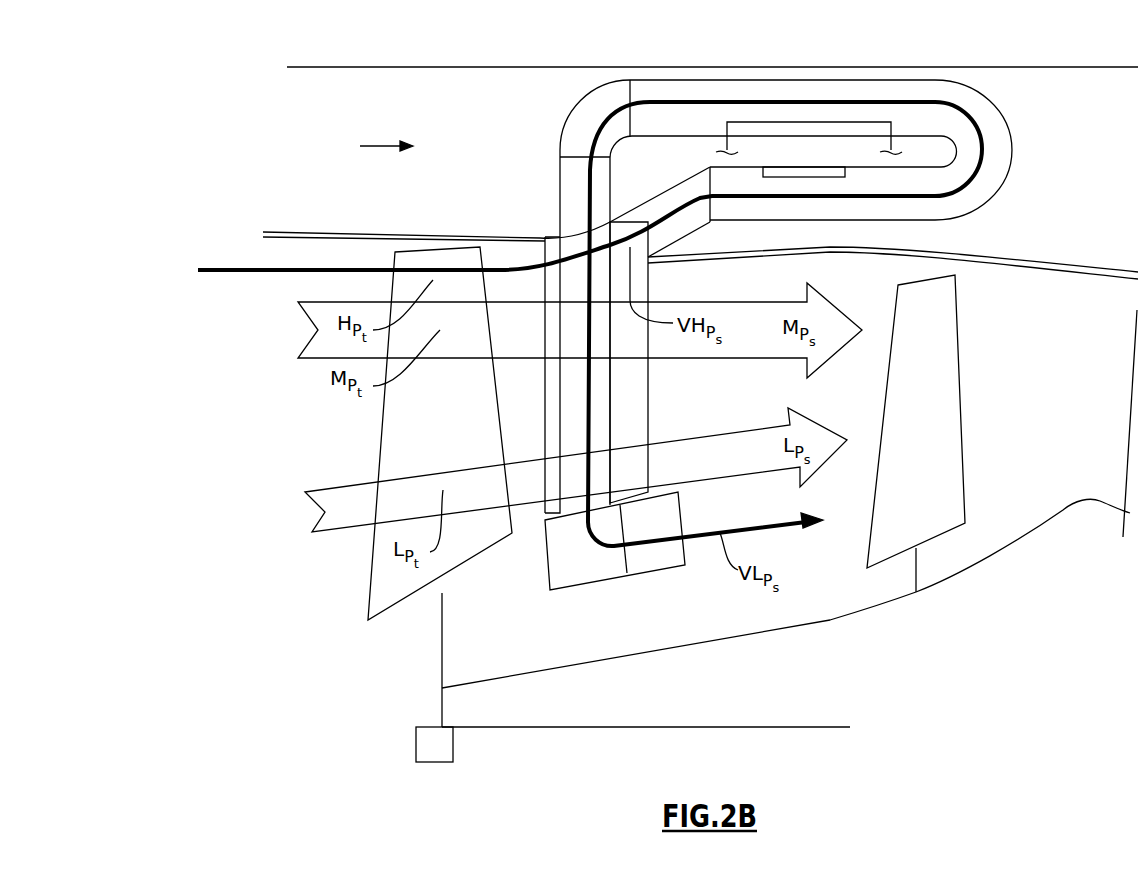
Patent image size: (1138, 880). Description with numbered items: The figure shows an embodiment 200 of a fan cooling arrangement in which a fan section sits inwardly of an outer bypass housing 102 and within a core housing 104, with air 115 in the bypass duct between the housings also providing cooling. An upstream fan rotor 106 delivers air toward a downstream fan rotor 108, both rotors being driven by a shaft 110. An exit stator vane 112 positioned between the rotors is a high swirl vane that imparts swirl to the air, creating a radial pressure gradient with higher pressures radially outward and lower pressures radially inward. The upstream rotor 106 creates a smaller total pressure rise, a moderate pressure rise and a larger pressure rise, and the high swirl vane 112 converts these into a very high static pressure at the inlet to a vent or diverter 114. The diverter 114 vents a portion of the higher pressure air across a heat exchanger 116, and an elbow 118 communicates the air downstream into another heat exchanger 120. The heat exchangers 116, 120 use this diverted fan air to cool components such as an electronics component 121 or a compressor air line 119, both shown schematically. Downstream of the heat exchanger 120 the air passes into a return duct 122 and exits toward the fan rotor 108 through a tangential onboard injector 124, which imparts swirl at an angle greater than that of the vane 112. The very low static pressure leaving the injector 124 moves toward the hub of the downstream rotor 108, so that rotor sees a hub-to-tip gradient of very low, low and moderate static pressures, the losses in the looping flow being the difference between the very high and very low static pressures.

The outer bypass housing 102 is at (330, 67).
The core housing 104 is at (318, 237).
The upstream fan rotor 106 is at (408, 420).
The downstream fan rotor 108 is at (937, 468).
The shaft 110 is at (588, 727).
The exit stator vane 112 is at (632, 385).
The vent or diverter 114 is at (700, 182).
The air 115 is at (380, 146).
The heat exchanger 116 is at (793, 212).
The elbow 118 is at (965, 95).
The compressor air line 119 is at (807, 122).
The heat exchanger 120 is at (663, 88).
The electronics component 121 is at (812, 172).
The return duct 122 is at (575, 385).
The tangential onboard injector 124 is at (648, 560).
The embodiment 200 is at (240, 176).